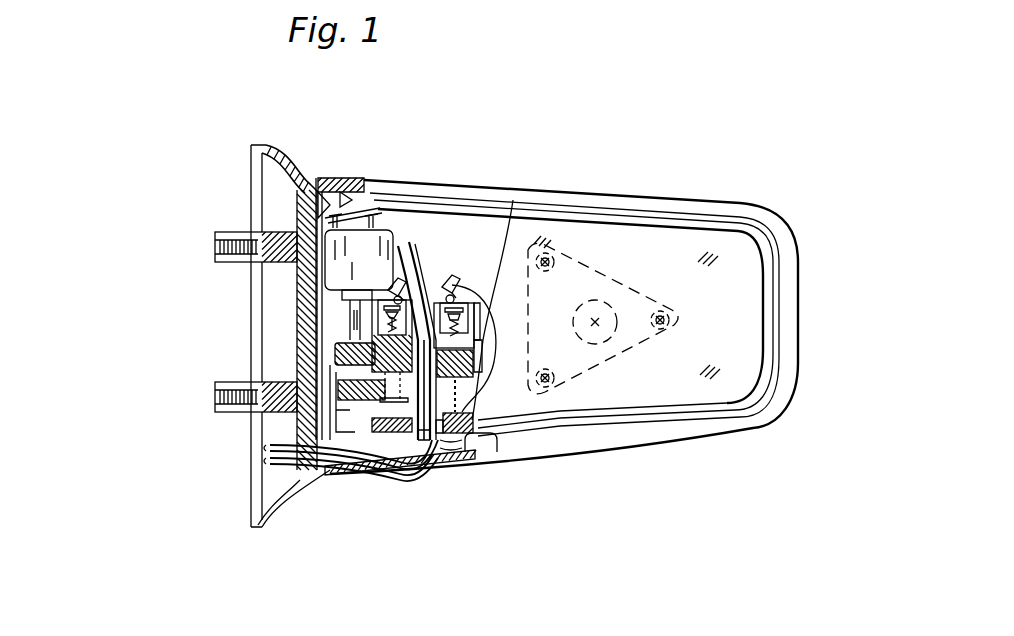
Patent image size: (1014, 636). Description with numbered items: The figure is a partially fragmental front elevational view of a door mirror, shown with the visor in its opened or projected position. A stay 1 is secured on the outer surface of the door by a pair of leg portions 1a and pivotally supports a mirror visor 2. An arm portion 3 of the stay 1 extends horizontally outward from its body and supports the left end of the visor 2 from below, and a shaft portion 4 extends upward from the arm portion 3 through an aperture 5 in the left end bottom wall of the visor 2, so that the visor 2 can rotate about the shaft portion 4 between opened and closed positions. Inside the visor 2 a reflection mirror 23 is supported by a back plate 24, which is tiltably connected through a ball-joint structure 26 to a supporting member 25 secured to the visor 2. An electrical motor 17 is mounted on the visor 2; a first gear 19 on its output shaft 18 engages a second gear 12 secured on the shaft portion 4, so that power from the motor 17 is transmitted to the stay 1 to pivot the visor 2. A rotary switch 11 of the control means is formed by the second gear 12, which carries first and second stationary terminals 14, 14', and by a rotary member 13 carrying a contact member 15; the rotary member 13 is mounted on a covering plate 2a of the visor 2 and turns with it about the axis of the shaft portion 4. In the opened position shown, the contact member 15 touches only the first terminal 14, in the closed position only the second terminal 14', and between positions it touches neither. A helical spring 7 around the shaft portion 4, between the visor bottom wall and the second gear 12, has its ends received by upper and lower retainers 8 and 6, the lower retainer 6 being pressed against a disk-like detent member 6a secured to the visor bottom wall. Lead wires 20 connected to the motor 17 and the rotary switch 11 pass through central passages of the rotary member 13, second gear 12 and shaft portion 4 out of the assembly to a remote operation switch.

The stay 1 is at (262, 142).
The leg portions 1a is at (228, 233).
The mirror visor 2 is at (368, 186).
The covering plate 2a is at (308, 180).
The arm portion 3 is at (478, 453).
The shaft portion 4 is at (445, 440).
The aperture 5 is at (414, 440).
The lower spring retainer 6 is at (408, 440).
The detent member 6a is at (468, 455).
The helical spring 7 is at (484, 392).
The upper spring retainer 8 is at (496, 376).
The rotary switch 11 is at (556, 108).
The second gear 12 is at (508, 345).
The rotary member 13 is at (428, 300).
The first stationary terminal 14 is at (473, 330).
The second stationary terminal 14' is at (291, 343).
The contact member 15 is at (465, 290).
The electrical motor 17 is at (347, 252).
The output shaft 18 is at (355, 338).
The first gear 19 is at (337, 363).
The lead wires 20 is at (434, 437).
The reflection mirror 23 is at (746, 300).
The back plate 24 is at (778, 259).
The supporting member 25 is at (650, 345).
The ball-joint structure 26 is at (602, 345).